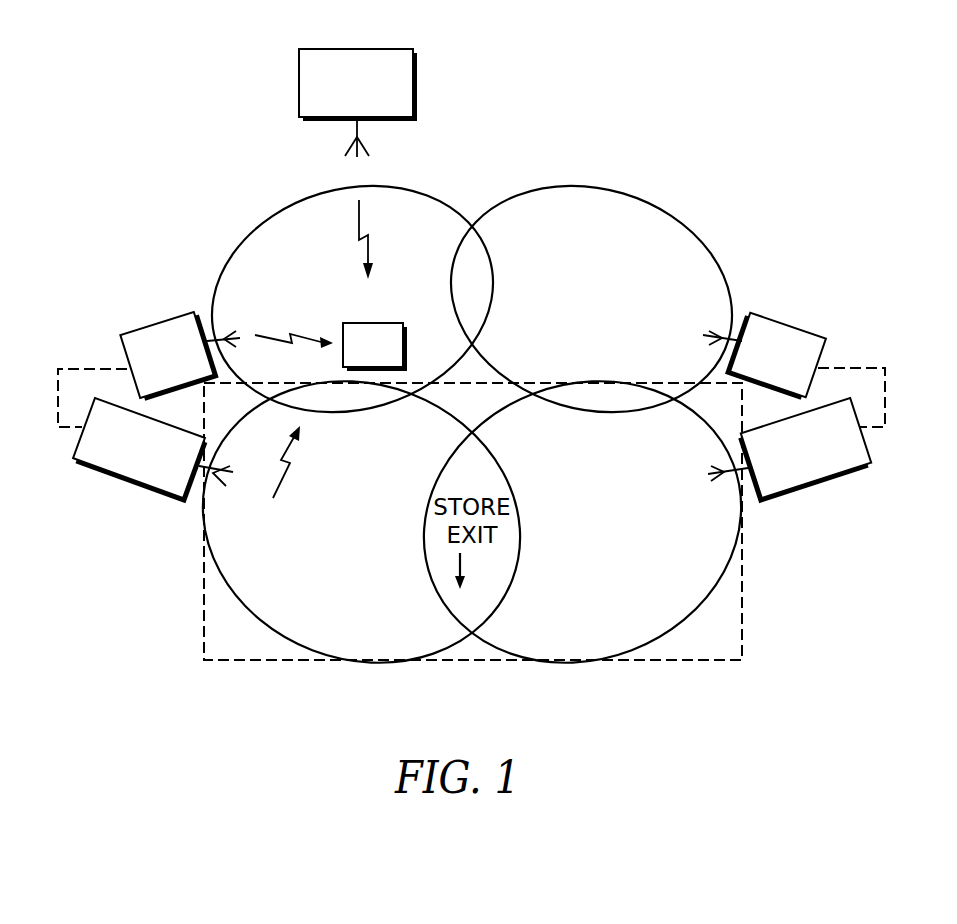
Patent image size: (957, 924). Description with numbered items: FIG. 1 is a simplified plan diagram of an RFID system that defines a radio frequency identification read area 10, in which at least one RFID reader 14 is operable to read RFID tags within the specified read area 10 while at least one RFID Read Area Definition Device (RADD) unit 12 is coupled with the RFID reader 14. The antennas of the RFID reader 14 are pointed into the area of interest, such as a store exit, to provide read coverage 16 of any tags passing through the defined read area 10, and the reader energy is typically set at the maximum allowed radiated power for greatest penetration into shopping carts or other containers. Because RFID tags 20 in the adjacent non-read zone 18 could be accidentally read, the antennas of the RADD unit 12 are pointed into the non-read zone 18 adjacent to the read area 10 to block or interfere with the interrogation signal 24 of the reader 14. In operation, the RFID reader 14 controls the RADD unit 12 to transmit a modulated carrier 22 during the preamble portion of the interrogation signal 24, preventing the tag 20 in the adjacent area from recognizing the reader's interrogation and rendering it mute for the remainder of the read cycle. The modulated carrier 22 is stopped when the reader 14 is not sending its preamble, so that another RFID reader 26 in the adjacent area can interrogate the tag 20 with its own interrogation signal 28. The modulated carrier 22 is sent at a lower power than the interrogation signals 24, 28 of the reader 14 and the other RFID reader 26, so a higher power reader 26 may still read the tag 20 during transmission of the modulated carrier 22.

The read area 10 is at (741, 603).
The RFID Read Area Definition Device (RADD) unit 12 is at (157, 326).
The RFID reader 14 is at (78, 445).
The read coverage 16 is at (391, 650).
The non-read zone 18 is at (261, 246).
The RFID tag 20 is at (375, 323).
The modulated carrier 22 is at (303, 333).
The interrogation signal 24 is at (92, 368).
The other RFID reader 26 is at (395, 48).
The interrogation signal 28 is at (359, 222).